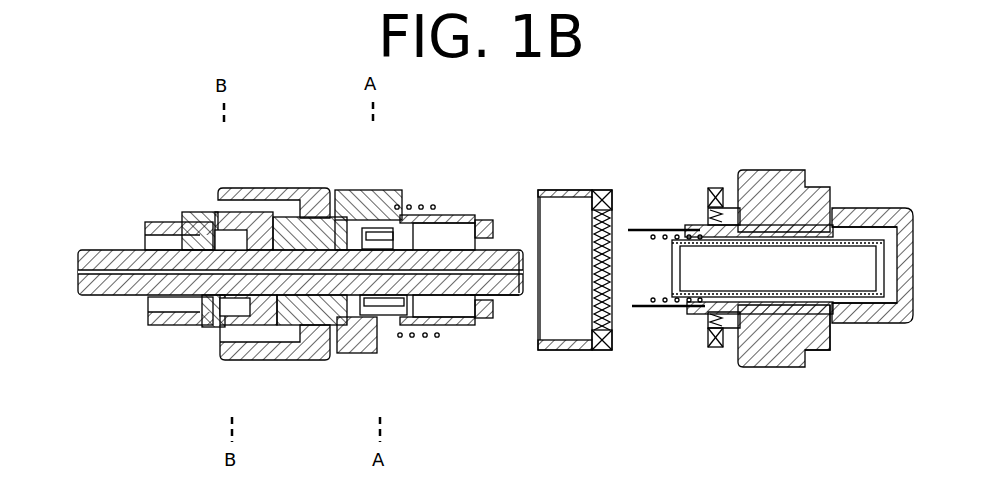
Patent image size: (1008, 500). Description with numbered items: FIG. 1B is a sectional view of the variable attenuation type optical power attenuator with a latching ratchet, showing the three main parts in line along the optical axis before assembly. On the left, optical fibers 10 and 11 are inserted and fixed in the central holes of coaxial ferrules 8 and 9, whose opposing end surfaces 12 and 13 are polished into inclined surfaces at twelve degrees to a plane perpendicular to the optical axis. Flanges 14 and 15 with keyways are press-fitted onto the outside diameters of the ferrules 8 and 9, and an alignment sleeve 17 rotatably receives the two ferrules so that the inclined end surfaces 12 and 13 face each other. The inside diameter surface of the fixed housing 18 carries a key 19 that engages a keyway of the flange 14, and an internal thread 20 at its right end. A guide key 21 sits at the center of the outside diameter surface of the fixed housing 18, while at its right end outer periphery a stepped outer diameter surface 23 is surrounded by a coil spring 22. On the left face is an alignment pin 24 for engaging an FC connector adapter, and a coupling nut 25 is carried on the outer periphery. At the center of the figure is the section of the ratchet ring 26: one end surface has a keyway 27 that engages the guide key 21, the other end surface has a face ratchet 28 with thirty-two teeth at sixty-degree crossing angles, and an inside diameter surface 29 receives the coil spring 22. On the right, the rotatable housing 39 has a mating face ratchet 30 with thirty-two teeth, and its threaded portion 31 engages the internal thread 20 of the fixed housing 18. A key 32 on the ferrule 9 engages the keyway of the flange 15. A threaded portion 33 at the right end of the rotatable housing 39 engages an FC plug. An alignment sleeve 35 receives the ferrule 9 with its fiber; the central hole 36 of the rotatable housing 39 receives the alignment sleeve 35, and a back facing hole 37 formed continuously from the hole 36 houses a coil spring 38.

The ferrule 8 is at (93, 258).
The ferrule 9 is at (496, 295).
The optical fiber 10 is at (116, 296).
The optical fiber 11 is at (514, 252).
The end surface 12 is at (296, 298).
The end surface 13 is at (302, 249).
The flange with keyway 14 is at (253, 327).
The flange with keyway 15 is at (403, 340).
The alignment sleeve 17 is at (348, 335).
The fixed housing 18 is at (158, 224).
The key 19 is at (230, 232).
The internal thread 20 is at (488, 220).
The guide key 21 is at (396, 200).
The coil spring 22 is at (430, 202).
The stepped outer diameter surface 23 is at (474, 214).
The alignment pin 24 is at (198, 214).
The coupling nut 25 is at (311, 190).
The ratchet ring 26 is at (588, 192).
The keyway 27 is at (546, 192).
The face ratchet 28 is at (611, 282).
The inside diameter surface 29 is at (558, 349).
The face ratchet 30 is at (714, 188).
The threaded portion 31 is at (693, 225).
The key 32 is at (638, 228).
The threaded portion 33 is at (870, 208).
The alignment sleeve 35 is at (756, 300).
The central hole 36 is at (823, 335).
The back facing hole 37 is at (710, 314).
The coil spring 38 is at (656, 298).
The rotatable housing 39 is at (766, 170).